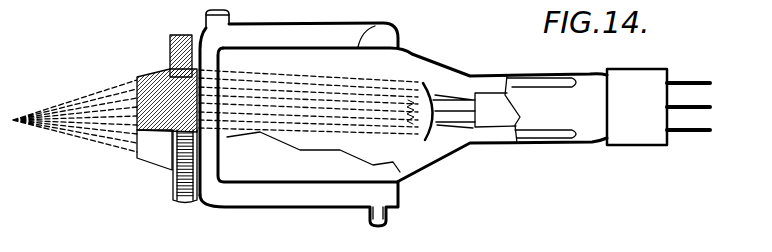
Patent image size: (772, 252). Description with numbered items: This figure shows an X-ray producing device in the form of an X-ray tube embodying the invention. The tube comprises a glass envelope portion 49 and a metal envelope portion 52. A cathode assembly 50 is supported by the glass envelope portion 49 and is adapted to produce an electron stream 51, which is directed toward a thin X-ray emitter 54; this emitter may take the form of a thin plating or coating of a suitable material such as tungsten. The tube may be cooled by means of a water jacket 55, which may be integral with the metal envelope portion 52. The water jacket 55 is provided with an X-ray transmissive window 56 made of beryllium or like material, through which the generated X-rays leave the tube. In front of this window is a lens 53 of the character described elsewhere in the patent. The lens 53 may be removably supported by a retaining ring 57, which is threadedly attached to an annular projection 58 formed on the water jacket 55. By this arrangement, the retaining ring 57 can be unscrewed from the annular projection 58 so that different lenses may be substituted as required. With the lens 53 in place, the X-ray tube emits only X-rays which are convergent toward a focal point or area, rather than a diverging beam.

The glass envelope portion 49 is at (443, 62).
The cathode assembly 50 is at (460, 121).
The electron stream 51 is at (400, 80).
The metal envelope portion 52 is at (373, 22).
The lens 53 is at (160, 160).
The X-ray emitter 54 is at (227, 63).
The water jacket 55 is at (260, 197).
The X-ray transmissive window 56 is at (207, 33).
The retaining ring 57 is at (170, 40).
The annular projection 58 is at (173, 50).